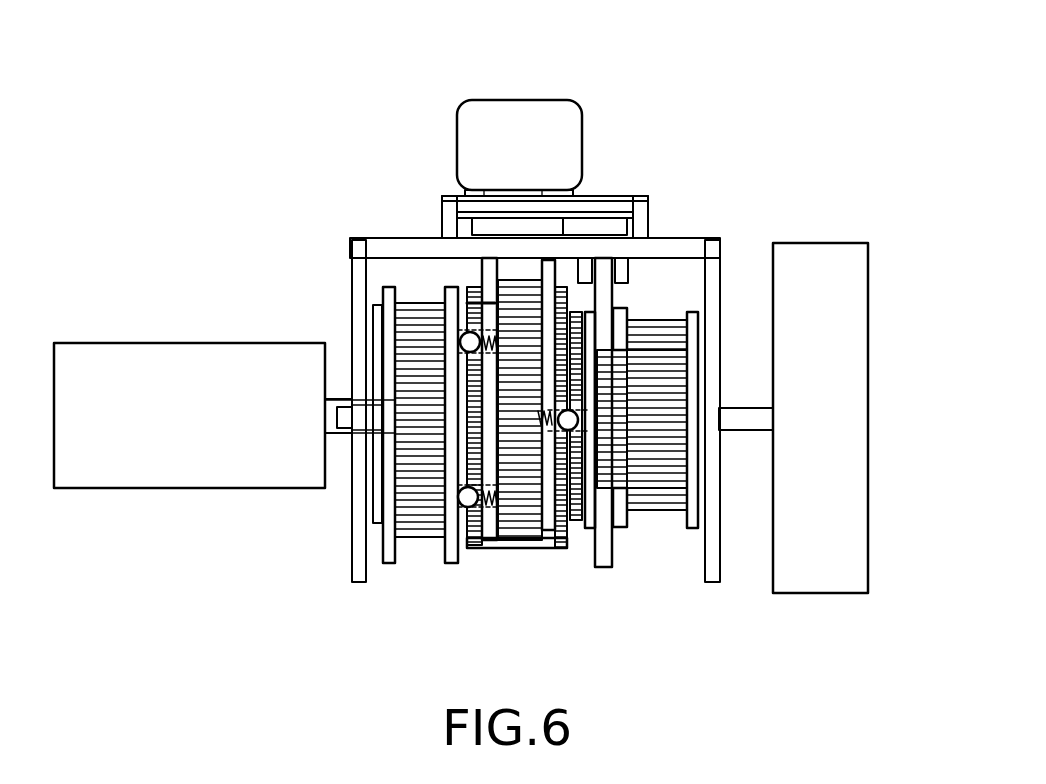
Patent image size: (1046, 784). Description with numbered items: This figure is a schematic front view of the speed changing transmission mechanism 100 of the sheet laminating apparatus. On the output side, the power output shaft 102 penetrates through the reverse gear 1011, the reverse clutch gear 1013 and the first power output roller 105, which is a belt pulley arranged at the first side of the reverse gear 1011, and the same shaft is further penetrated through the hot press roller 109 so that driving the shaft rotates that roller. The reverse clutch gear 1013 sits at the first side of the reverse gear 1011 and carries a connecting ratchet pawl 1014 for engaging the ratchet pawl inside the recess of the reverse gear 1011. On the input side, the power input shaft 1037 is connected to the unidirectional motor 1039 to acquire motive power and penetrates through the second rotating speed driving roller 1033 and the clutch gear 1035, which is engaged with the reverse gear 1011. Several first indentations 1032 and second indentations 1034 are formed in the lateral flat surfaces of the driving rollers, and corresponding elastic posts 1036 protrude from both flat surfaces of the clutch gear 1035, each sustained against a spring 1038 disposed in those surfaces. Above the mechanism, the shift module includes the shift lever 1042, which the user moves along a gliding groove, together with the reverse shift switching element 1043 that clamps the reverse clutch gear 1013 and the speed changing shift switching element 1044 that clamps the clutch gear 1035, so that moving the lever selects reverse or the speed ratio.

The speed changing transmission mechanism 100 is at (450, 20).
The power output shaft 102 is at (330, 405).
The first power output roller 105 is at (655, 330).
The hot press roller 109 is at (155, 355).
The reverse gear 1011 is at (468, 285).
The reverse clutch gear 1013 is at (618, 267).
The connecting ratchet pawl 1014 is at (570, 290).
The first indentations 1032 is at (590, 422).
The second rotating speed driving roller 1033 is at (433, 497).
The second indentations 1034 is at (450, 337).
The clutch gear 1035 is at (530, 550).
The elastic posts 1036 is at (477, 330).
The power input shaft 1037 is at (762, 418).
The springs 1038 is at (562, 430).
The unidirectional motor 1039 is at (852, 333).
The shift lever 1042 is at (540, 115).
The reverse shift switching element 1043 is at (603, 273).
The speed changing shift switching element 1044 is at (490, 273).